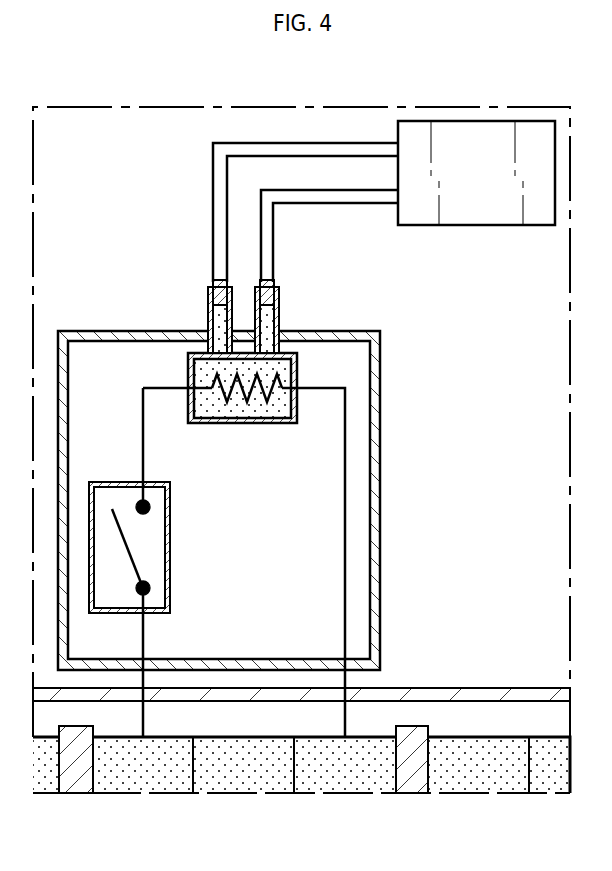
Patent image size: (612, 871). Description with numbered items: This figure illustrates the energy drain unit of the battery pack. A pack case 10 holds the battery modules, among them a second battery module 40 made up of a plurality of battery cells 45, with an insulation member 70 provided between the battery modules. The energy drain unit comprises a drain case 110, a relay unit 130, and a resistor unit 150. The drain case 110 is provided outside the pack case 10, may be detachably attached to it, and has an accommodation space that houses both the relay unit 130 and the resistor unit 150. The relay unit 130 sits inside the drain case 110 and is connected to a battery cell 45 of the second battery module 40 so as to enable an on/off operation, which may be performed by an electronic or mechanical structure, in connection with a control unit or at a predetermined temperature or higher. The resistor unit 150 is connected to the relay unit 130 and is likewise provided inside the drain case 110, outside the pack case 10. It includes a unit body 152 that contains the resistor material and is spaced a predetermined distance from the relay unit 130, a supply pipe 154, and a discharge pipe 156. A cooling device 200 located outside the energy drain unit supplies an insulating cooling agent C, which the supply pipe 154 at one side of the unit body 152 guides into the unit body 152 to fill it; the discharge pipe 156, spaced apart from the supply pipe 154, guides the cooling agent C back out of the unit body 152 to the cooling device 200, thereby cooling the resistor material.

The cooling device 200 is at (521, 117).
The drain case 110 is at (380, 501).
The pack case 10 is at (478, 688).
The second battery module 40 is at (240, 798).
The battery cell 45 is at (138, 776).
The insulation member 70 is at (77, 776).
The relay unit 130 is at (182, 545).
The resistor unit 150 is at (306, 357).
The unit body 152 is at (297, 378).
The supply pipe 154 is at (207, 296).
The discharge pipe 156 is at (281, 296).
The cooling agent C is at (188, 354).